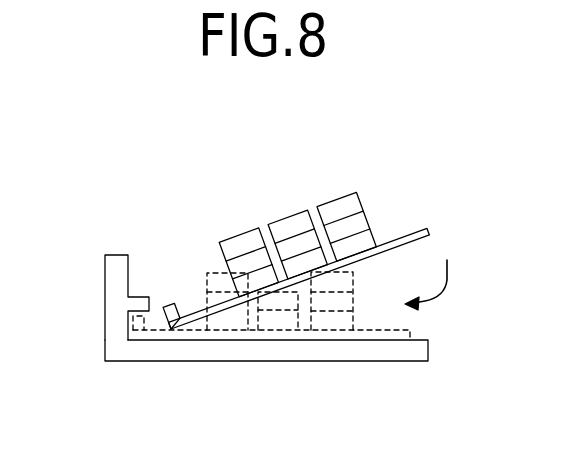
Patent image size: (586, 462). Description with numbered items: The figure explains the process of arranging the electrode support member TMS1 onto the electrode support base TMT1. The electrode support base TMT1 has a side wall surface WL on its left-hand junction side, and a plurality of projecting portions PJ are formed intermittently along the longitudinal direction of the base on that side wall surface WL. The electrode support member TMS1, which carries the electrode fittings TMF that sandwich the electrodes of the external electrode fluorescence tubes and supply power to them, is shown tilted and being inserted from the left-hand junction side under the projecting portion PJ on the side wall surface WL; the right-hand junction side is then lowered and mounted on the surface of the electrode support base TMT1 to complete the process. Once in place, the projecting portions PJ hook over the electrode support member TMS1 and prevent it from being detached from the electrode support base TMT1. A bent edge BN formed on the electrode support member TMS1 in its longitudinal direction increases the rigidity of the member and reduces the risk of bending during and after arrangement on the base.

The side wall surface WL is at (131, 268).
The electrode support base TMT1 is at (285, 352).
The projecting portion PJ is at (137, 303).
The electrode support member TMS1 is at (405, 236).
The bent edge BN is at (167, 315).
The electrode fitting TMF is at (291, 225).